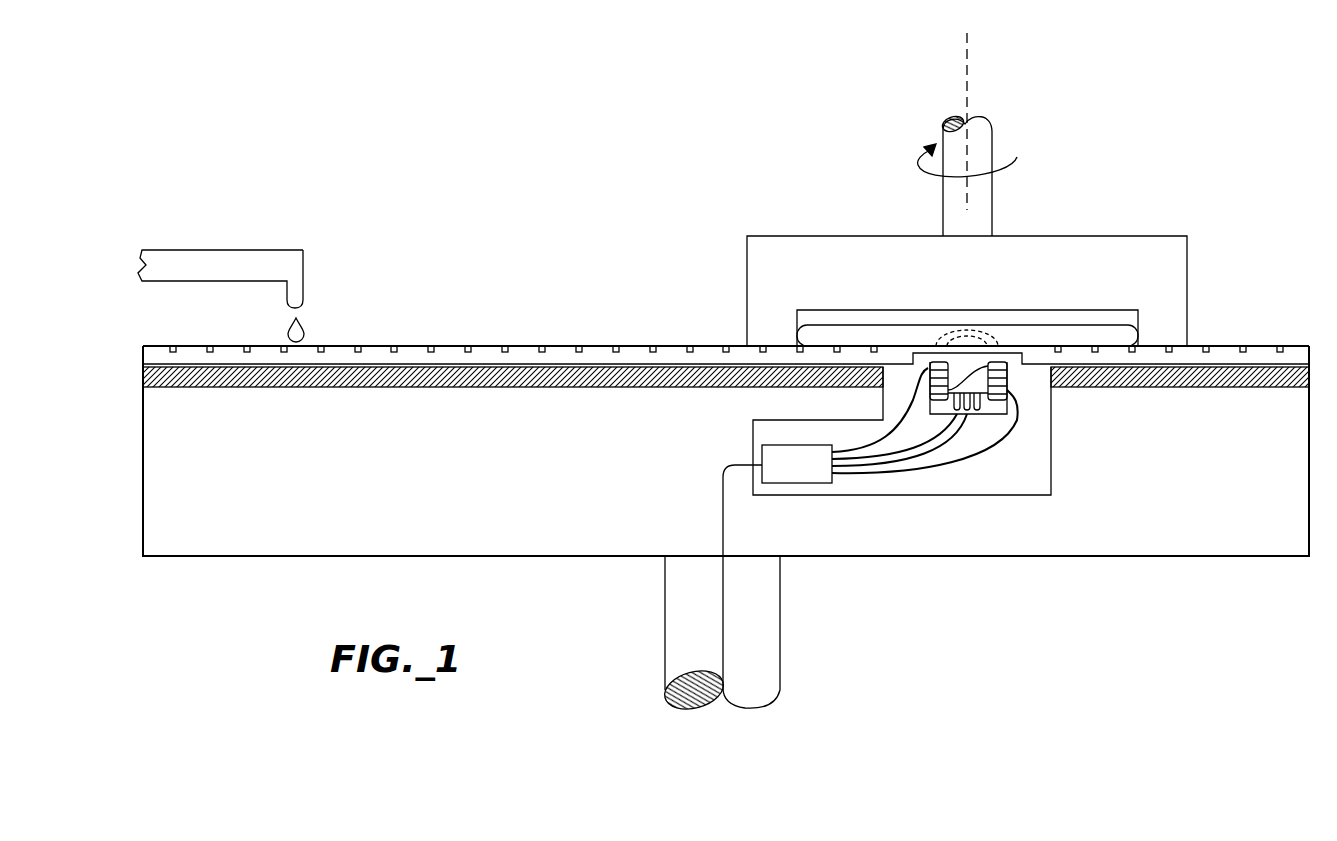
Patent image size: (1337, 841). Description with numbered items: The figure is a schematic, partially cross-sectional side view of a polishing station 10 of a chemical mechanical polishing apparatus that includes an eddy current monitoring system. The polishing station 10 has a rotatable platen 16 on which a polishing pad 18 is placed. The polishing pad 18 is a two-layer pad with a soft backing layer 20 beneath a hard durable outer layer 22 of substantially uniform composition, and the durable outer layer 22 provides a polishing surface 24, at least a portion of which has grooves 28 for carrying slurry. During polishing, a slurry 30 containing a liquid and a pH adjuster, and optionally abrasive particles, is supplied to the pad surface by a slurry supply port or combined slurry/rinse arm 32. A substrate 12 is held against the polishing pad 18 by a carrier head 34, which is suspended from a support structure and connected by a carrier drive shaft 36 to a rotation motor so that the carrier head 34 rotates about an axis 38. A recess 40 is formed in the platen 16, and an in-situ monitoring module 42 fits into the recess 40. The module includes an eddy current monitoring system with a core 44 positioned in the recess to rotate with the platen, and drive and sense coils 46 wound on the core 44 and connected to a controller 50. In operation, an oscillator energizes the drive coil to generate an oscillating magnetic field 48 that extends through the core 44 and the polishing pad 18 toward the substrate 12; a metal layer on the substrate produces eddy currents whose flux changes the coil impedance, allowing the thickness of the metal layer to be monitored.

The polishing station 10 is at (154, 178).
The substrate 12 is at (1085, 333).
The rotatable platen 16 is at (170, 482).
The polishing pad 18 is at (138, 341).
The soft backing layer 20 is at (1246, 380).
The hard durable outer layer 22 is at (1255, 352).
The polishing surface 24 is at (340, 346).
The grooves 28 is at (580, 346).
The slurry 30 is at (290, 328).
The slurry/rinse arm 32 is at (214, 250).
The carrier head 34 is at (805, 250).
The carrier drive shaft 36 is at (987, 220).
The axis 38 is at (970, 67).
The recess 40 is at (1050, 475).
The in-situ monitoring module 42 is at (849, 481).
The core 44 is at (990, 417).
The drive and sense coils 46 is at (1008, 378).
The oscillating magnetic field 48 is at (943, 333).
The controller 50 is at (797, 464).